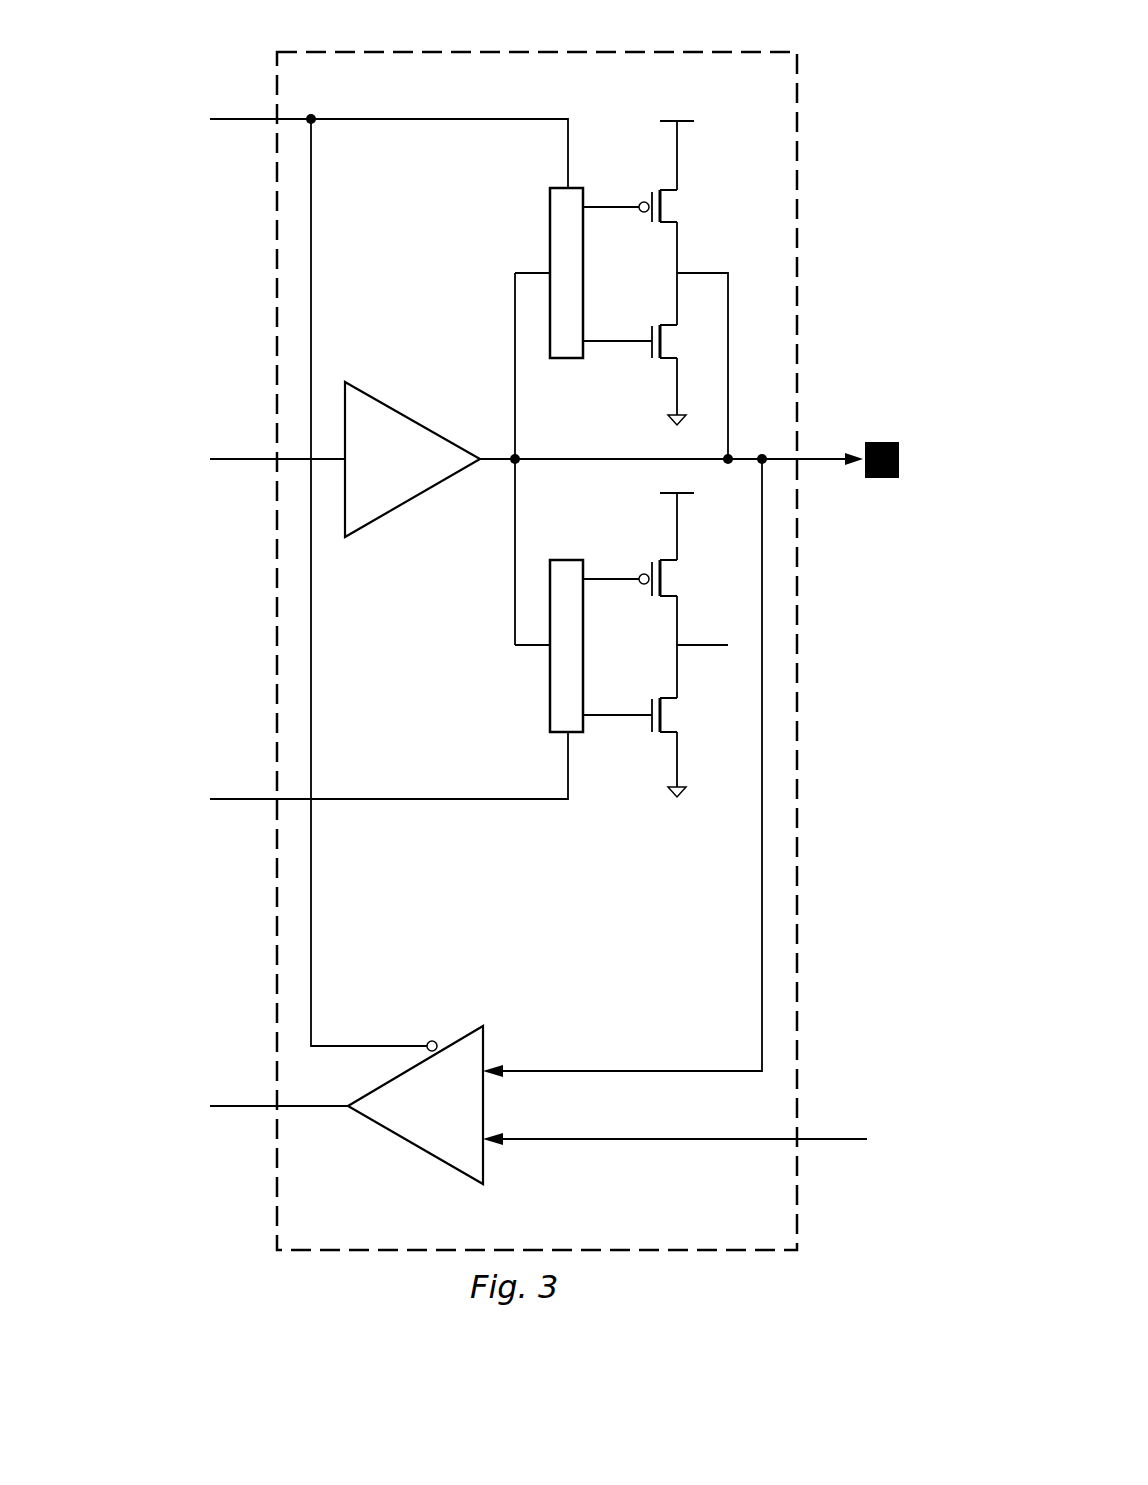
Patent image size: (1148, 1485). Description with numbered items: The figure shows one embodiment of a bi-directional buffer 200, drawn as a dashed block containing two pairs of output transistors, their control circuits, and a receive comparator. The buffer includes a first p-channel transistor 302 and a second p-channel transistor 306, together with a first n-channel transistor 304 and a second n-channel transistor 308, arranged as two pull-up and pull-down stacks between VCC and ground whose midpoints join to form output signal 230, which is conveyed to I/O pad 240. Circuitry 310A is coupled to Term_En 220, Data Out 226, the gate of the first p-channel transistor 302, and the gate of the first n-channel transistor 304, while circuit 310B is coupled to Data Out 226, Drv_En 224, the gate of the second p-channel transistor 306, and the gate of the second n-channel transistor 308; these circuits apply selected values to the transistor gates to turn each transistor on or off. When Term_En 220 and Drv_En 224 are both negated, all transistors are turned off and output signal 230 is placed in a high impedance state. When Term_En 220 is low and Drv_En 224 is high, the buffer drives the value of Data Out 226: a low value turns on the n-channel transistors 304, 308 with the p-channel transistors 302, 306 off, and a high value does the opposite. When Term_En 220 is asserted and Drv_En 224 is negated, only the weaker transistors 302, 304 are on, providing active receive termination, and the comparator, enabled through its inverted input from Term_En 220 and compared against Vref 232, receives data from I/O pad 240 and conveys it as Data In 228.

The bi-directional buffer 200 is at (790, 1242).
The Term_En signal 220 is at (335, 569).
The Drv_En signal 224 is at (340, 779).
The Data Out signal 226 is at (416, 459).
The Data In signal 228 is at (441, 819).
The output signal 230 is at (822, 459).
The Vref reference voltage 232 is at (714, 1141).
The I/O pad 240 is at (884, 490).
The p-channel transistor Ru1 302 is at (687, 190).
The n-channel transistor Rd1 304 is at (684, 358).
The p-channel transistor Ru2 306 is at (686, 596).
The n-channel transistor Rd2 308 is at (686, 732).
The circuitry 310A is at (549, 221).
The circuit 310B is at (549, 700).